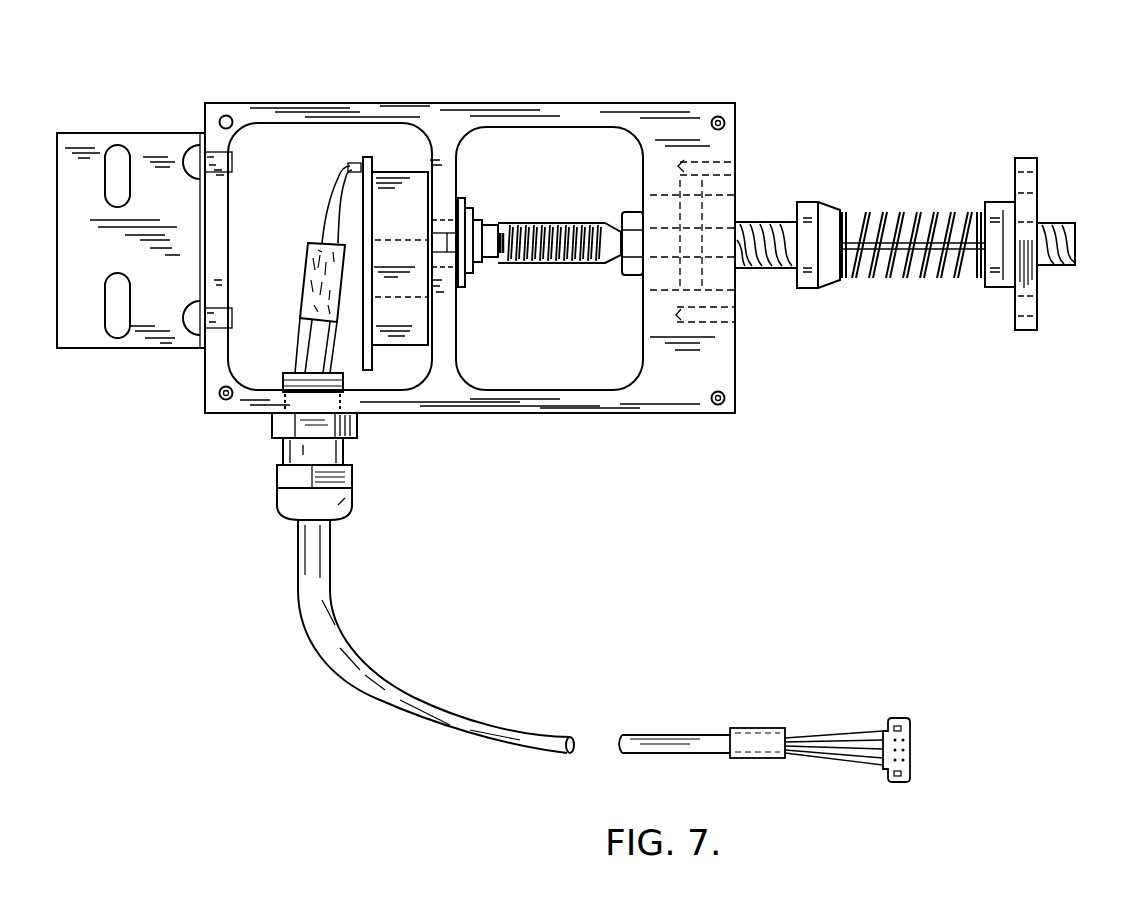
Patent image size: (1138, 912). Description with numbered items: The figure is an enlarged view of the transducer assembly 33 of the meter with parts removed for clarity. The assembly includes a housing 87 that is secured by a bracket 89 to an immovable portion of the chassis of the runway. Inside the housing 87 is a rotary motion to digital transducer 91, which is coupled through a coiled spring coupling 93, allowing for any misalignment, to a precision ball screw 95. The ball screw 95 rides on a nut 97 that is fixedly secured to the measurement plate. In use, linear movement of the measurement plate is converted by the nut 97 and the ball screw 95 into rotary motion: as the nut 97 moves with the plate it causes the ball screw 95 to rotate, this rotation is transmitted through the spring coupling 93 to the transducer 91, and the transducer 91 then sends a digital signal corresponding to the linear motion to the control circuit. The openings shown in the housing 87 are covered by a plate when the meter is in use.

The transducer assembly 33 is at (440, 60).
The housing 87 is at (550, 103).
The bracket 89 is at (178, 204).
The rotary motion to digital transducer 91 is at (409, 217).
The coiled spring coupling 93 is at (553, 262).
The precision ball screw 95 is at (903, 278).
The nut 97 is at (1038, 176).